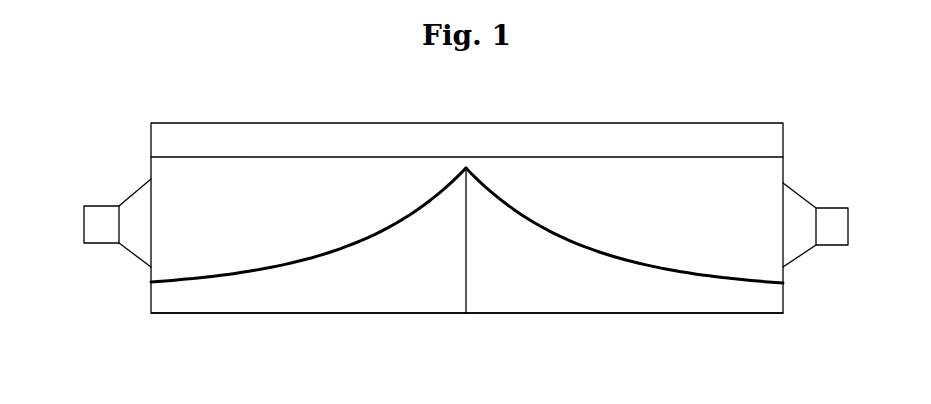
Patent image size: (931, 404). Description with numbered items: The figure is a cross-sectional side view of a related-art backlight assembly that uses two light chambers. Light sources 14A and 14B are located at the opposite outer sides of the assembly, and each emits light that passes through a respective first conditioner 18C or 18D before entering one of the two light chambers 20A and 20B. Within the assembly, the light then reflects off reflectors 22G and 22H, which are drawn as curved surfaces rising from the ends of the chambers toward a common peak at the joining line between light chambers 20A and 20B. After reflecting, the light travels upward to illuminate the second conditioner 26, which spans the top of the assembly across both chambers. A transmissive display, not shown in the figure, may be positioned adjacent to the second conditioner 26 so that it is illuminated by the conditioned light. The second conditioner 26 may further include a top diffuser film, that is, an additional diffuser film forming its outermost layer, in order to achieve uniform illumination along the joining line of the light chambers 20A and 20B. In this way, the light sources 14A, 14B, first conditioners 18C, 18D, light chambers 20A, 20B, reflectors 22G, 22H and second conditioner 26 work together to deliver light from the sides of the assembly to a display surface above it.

The second conditioner 26 is at (784, 137).
The first conditioner 18C is at (132, 192).
The first conditioner 18D is at (803, 192).
The light source 14A is at (98, 244).
The light source 14B is at (836, 246).
The light chamber 20A is at (277, 314).
The light chamber 20B is at (603, 314).
The reflector 22G is at (330, 253).
The reflector 22H is at (595, 252).